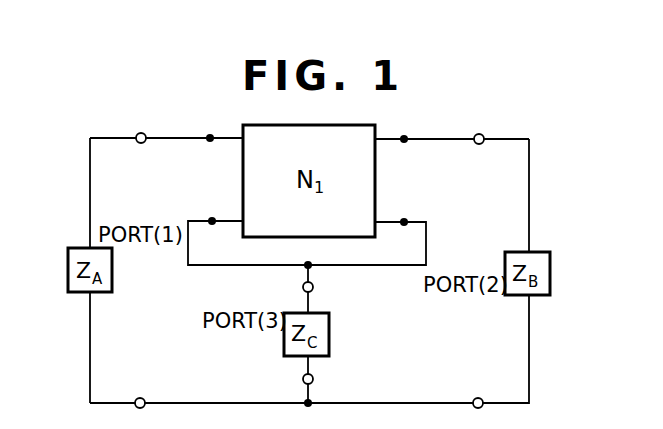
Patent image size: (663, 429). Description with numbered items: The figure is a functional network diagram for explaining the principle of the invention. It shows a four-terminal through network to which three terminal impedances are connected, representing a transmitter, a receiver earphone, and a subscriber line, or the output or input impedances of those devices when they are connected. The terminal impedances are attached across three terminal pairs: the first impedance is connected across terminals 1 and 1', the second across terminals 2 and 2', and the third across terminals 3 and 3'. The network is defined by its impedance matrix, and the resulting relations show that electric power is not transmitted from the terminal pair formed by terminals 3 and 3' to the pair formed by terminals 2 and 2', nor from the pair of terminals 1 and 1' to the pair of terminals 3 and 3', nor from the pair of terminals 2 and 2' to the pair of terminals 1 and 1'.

The terminal 1 is at (143, 124).
The terminal 2 is at (478, 127).
The terminal 3 is at (316, 290).
The terminal 1' is at (145, 390).
The terminal 2' is at (478, 391).
The terminal 3' is at (318, 376).